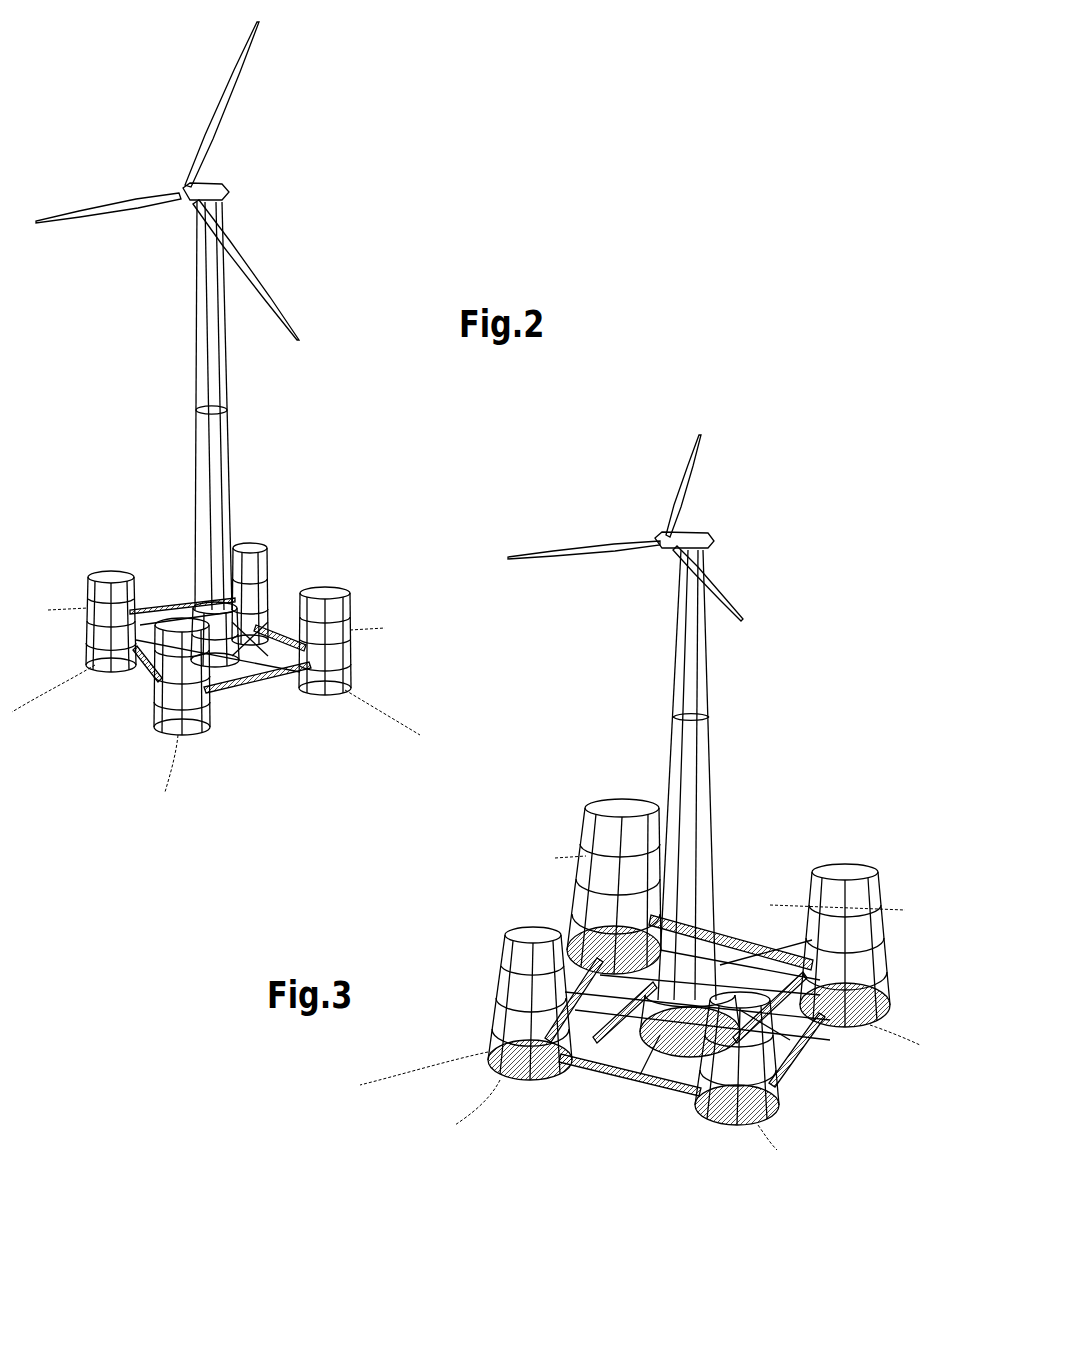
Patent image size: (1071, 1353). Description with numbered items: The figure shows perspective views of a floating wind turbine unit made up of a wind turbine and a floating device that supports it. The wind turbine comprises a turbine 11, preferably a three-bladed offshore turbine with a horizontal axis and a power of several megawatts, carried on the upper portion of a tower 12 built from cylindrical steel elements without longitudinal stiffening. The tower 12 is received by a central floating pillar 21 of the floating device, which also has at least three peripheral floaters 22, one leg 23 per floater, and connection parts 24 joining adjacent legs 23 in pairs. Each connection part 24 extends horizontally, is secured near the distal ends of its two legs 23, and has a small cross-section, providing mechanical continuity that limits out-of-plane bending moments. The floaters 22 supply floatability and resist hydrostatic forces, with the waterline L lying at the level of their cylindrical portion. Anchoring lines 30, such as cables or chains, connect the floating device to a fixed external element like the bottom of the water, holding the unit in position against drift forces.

In FIG. 2, the turbine 11 is at (222, 192).
In FIG. 3, the turbine 11 is at (712, 532).
In FIG. 2, the tower 12 is at (212, 450).
In FIG. 3, the tower 12 is at (690, 745).
In FIG. 2, the waterline L is at (72, 608).
In FIG. 3, the waterline L is at (570, 855).
In FIG. 2, the central floating pillar 21 is at (210, 608).
In FIG. 3, the central floating pillar 21 is at (652, 1055).
In FIG. 2, the peripheral floater 22 is at (164, 700).
In FIG. 3, the peripheral floater 22 is at (835, 888).
In FIG. 2, the leg 23 is at (250, 645).
In FIG. 3, the leg 23 is at (745, 1012).
In FIG. 2, the connection part 24 is at (255, 695).
In FIG. 3, the connection part 24 is at (725, 940).
In FIG. 2, the line 30 is at (74, 676).
In FIG. 3, the line 30 is at (472, 1055).